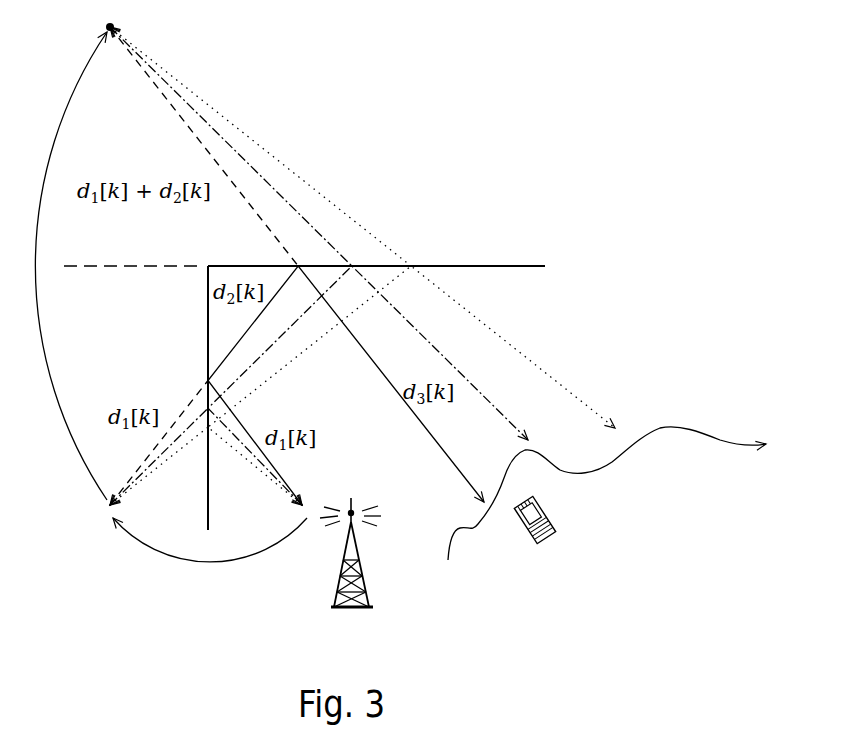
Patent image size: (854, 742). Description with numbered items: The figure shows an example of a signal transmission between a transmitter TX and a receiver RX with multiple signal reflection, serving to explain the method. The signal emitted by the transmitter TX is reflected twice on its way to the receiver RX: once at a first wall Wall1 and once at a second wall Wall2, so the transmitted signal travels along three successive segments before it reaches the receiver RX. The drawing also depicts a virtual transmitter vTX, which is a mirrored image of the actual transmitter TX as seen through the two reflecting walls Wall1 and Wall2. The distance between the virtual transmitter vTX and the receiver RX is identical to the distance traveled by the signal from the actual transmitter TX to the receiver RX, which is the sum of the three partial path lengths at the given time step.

The transmitter TX is at (350, 573).
The receiver RX is at (607, 493).
The virtual transmitter vTX is at (148, 25).
The first wall Wall1 is at (239, 401).
The second wall Wall2 is at (306, 286).